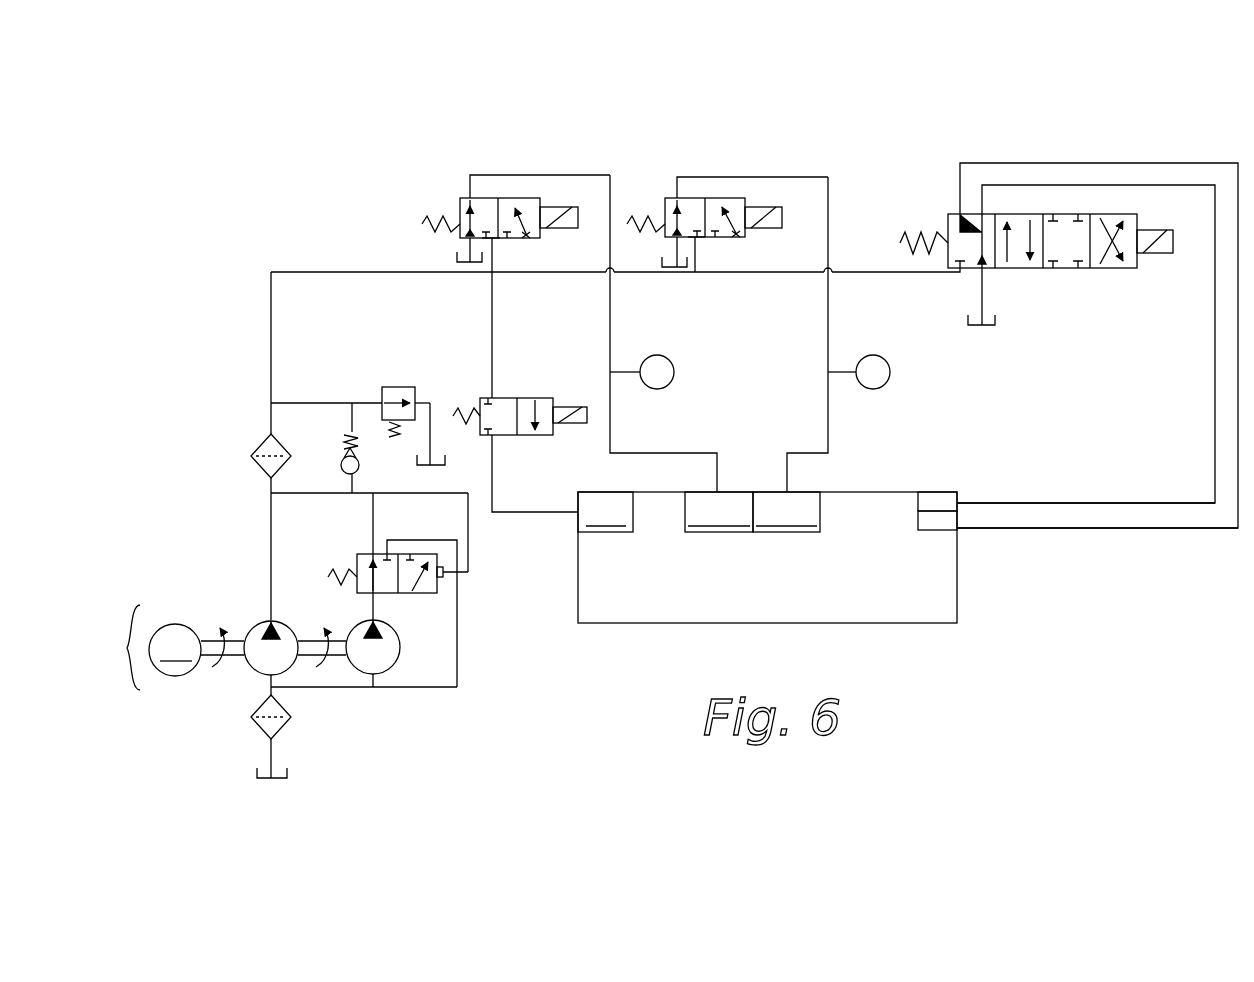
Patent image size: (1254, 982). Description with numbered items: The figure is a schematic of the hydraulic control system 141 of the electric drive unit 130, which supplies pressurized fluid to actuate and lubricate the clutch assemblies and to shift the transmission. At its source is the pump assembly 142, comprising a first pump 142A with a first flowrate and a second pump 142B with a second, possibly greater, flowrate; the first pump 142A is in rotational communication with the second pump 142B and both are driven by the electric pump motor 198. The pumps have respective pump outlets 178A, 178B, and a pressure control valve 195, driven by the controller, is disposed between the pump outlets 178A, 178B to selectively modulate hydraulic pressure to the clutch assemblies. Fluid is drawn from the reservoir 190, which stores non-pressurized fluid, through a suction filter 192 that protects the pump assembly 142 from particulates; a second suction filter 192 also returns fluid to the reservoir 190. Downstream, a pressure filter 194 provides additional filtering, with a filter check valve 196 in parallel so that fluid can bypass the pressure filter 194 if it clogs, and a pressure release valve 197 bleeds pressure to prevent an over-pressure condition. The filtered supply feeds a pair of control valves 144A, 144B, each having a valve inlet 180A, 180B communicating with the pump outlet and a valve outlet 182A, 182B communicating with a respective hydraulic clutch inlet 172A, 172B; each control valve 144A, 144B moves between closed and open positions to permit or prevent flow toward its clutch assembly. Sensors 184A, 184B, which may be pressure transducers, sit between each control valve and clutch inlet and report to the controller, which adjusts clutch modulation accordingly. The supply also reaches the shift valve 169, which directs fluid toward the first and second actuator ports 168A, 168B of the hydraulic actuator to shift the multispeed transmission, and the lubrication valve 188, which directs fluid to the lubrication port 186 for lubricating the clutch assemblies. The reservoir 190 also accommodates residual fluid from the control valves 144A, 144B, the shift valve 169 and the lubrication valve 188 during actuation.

The electric drive unit 130 is at (640, 626).
The hydraulic control system 141 is at (768, 145).
The pump assembly 142 is at (106, 647).
The first pump 142A is at (256, 678).
The second pump 142B is at (392, 670).
The control valve 144A is at (456, 207).
The control valve 144B is at (663, 207).
The first actuator port 168A is at (938, 502).
The second actuator port 168B is at (937, 526).
The shift valve 169 is at (1066, 274).
The hydraulic clutch inlet 172A is at (719, 512).
The hydraulic clutch inlet 172B is at (786, 512).
The pump outlet 178A is at (268, 618).
The pump outlet 178B is at (362, 615).
The valve inlet 180A is at (494, 240).
The valve inlet 180B is at (697, 240).
The valve outlet 182A is at (465, 196).
The valve outlet 182B is at (670, 196).
The sensor 184A is at (668, 358).
The sensor 184B is at (880, 356).
The lubrication port 186 is at (605, 512).
The lubrication valve 188 is at (527, 398).
The reservoir 190 is at (457, 256).
The suction filter 192 is at (252, 739).
The pressure filter 194 is at (251, 447).
The pressure control valve 195 is at (428, 597).
The filter check valve 196 is at (360, 473).
The pressure release valve 197 is at (403, 387).
The electric pump motor 198 is at (196, 650).